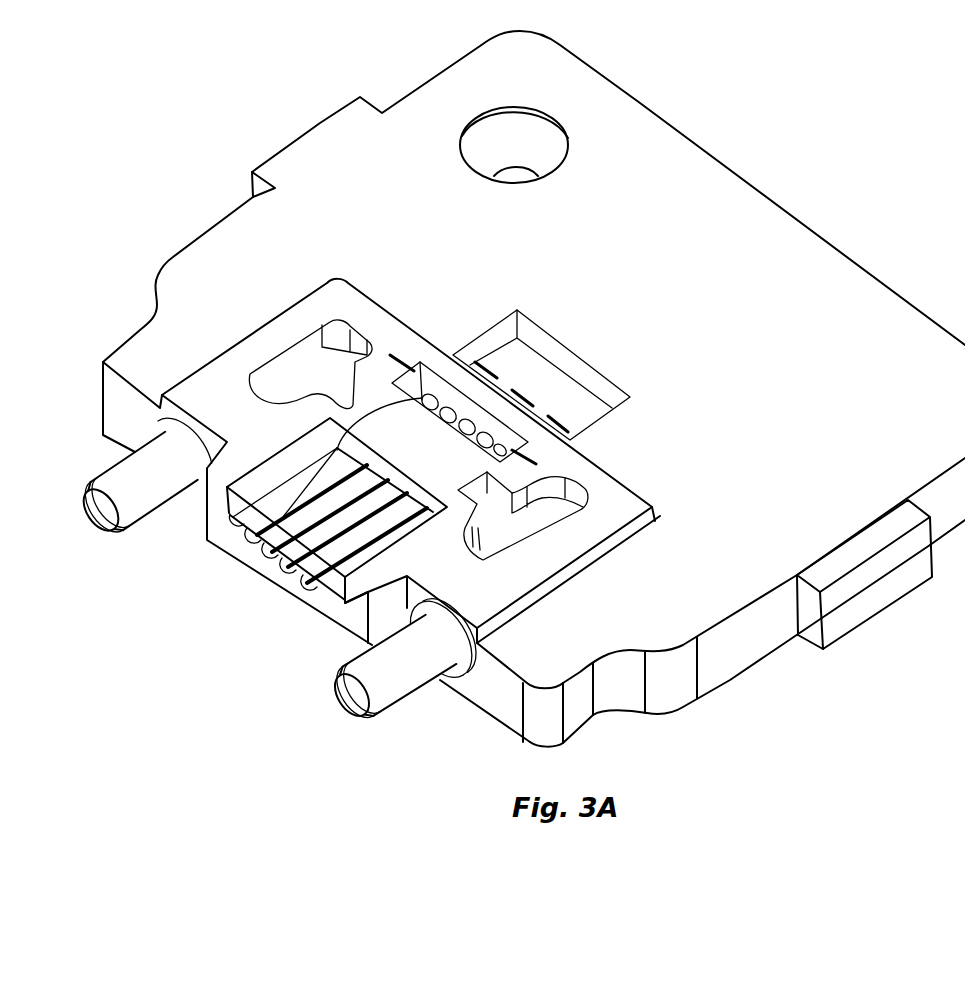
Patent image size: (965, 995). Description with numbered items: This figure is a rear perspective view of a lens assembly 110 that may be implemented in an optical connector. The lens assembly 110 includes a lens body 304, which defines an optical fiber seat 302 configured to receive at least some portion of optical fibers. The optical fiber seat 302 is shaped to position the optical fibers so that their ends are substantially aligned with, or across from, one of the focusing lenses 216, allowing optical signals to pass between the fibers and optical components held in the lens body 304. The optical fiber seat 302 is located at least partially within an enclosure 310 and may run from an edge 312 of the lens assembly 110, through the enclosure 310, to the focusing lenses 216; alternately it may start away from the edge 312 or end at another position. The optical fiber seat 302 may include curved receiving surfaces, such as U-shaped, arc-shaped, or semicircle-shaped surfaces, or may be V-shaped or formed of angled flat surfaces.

The lens assembly 110 is at (157, 100).
The lens body 304 is at (822, 396).
The optical fiber seat 302 is at (340, 573).
The focusing lenses 216 is at (386, 489).
The enclosure 310 is at (315, 583).
The edge 312 is at (347, 622).